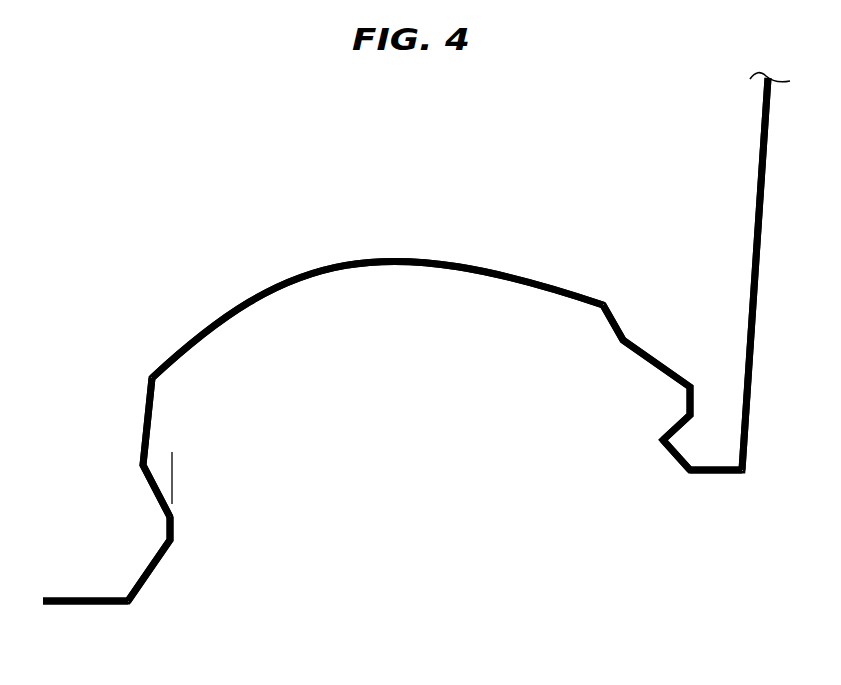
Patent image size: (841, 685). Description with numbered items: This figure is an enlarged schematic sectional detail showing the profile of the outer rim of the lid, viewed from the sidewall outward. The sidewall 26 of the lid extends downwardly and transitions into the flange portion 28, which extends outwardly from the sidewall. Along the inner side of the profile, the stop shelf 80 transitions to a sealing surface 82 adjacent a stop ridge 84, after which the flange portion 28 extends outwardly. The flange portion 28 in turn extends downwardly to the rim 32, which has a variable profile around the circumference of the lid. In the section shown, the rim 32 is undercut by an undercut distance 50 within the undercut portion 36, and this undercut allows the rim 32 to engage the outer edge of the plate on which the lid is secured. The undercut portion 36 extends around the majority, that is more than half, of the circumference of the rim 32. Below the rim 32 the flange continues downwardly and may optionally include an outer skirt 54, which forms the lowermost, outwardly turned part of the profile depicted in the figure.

The sidewall 26 is at (754, 251).
The flange portion 28 is at (352, 250).
The rim 32 is at (165, 524).
The undercut portion 36 is at (182, 465).
The undercut distance 50 is at (137, 465).
The outer skirt 54 is at (78, 606).
The stop shelf 80 is at (712, 474).
The sealing surface 82 is at (667, 451).
The stop ridge 84 is at (670, 430).